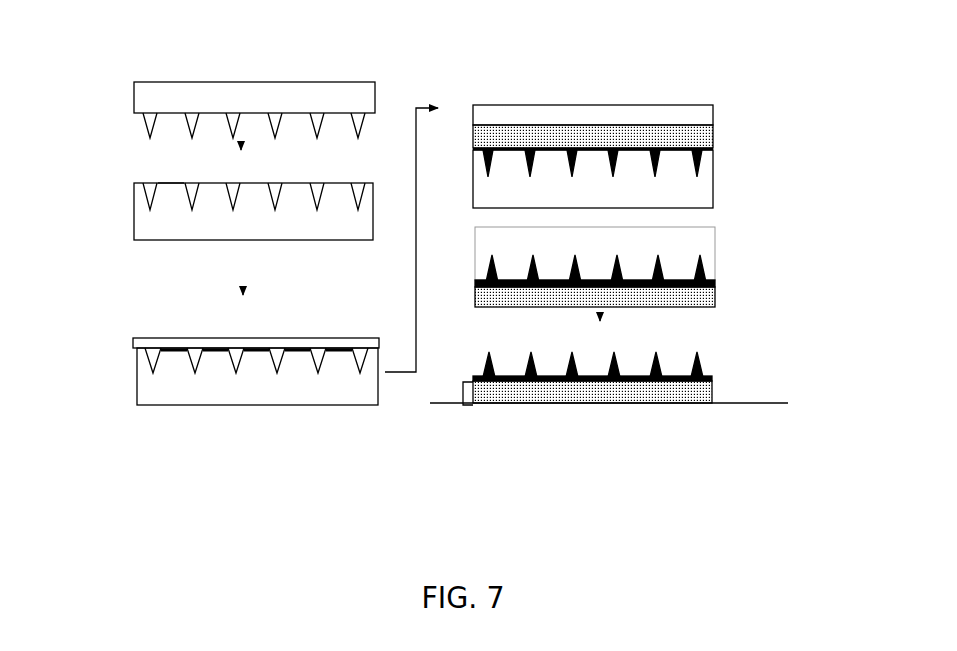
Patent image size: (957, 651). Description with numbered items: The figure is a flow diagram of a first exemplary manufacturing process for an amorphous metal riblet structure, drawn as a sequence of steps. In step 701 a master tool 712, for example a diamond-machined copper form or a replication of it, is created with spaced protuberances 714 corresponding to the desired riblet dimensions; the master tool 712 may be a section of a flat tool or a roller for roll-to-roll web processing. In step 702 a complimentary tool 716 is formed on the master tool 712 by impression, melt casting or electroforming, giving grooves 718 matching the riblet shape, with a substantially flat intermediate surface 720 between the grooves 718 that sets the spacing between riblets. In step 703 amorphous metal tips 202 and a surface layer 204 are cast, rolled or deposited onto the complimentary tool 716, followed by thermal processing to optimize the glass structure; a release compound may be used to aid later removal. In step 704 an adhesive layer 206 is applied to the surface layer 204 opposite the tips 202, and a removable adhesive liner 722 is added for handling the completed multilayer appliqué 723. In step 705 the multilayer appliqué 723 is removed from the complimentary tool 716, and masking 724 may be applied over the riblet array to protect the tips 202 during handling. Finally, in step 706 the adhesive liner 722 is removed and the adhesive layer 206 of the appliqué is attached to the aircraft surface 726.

The master tool creation step 701 is at (115, 118).
The complimentary tool creation step 702 is at (115, 224).
The casting step 703 is at (113, 361).
The adhesive application step 704 is at (778, 180).
The appliqué removal step 705 is at (810, 278).
The aircraft application step 706 is at (831, 405).
The master tool 712 is at (287, 71).
The spaced protuberances 714 is at (277, 117).
The complimentary tool 716 is at (305, 250).
The grooves 718 is at (233, 182).
The flat intermediate surface 720 is at (173, 183).
The removable adhesive liner 722 is at (703, 113).
The multilayer appliqué 723 is at (460, 392).
The masking 724 is at (726, 246).
The aircraft surface 726 is at (707, 405).
The amorphous metal tips 202 is at (318, 361).
The surface layer 204 is at (332, 340).
The adhesive layer 206 is at (706, 140).